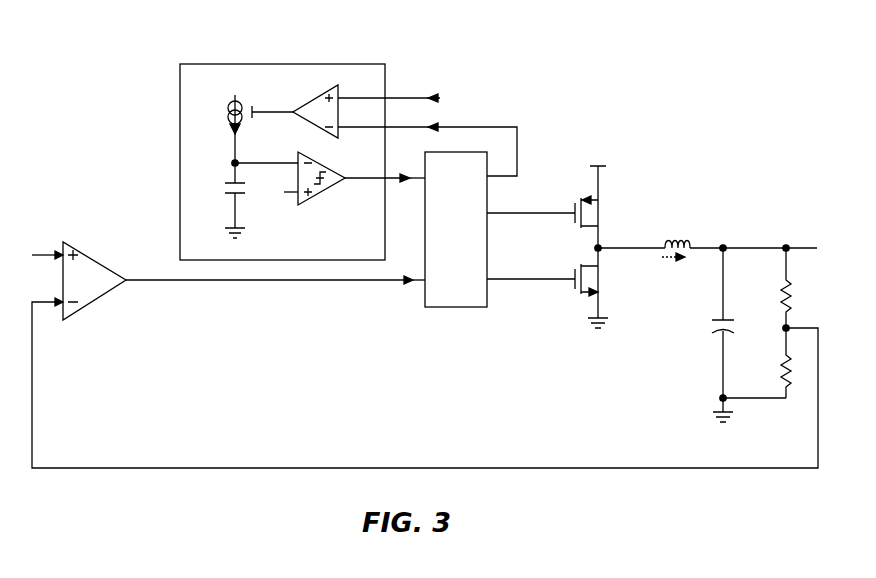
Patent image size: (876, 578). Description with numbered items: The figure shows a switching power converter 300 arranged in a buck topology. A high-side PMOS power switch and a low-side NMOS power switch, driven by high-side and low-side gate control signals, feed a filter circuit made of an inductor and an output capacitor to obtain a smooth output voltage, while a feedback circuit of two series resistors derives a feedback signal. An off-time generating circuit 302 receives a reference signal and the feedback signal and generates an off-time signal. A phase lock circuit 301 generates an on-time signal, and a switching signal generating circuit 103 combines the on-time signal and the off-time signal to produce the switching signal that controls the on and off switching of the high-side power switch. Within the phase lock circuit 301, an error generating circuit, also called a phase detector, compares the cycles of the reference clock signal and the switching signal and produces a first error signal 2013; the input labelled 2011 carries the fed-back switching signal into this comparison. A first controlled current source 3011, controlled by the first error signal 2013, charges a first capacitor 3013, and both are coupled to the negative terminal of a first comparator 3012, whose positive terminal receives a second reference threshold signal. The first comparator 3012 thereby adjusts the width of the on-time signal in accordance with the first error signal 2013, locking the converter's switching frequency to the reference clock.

The switching power converter 300 is at (637, 182).
The phase lock circuit 301 is at (350, 75).
The off-time generating circuit 302 is at (96, 298).
The switching signal generating circuit 103 is at (445, 290).
The feedback input of amplifier 2011 is at (338, 133).
The first error signal 2013 is at (265, 108).
The first controlled current source 3011 is at (229, 120).
The first comparator 3012 is at (330, 196).
The first capacitor 3013 is at (224, 198).